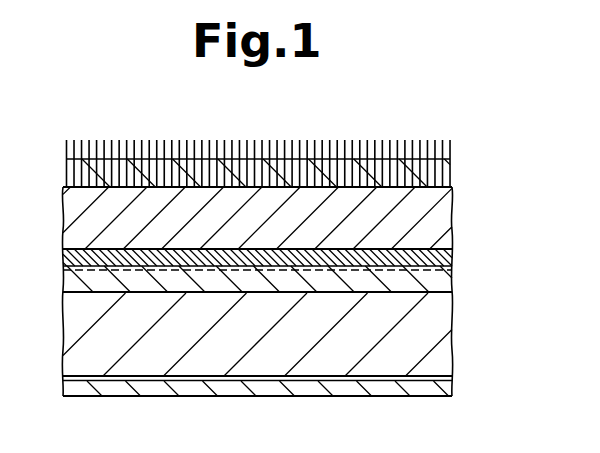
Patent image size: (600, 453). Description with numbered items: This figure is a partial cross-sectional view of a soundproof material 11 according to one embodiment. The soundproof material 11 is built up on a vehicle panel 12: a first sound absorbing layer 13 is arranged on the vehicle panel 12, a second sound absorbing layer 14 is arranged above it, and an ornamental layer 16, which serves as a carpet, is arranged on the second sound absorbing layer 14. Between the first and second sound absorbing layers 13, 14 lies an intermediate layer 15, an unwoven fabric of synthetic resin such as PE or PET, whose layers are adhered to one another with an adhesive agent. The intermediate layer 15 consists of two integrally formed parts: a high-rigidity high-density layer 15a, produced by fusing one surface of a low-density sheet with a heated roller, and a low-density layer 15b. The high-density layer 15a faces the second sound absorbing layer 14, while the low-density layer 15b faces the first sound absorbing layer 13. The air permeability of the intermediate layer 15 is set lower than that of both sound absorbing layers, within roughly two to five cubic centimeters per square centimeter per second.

The soundproof material 11 is at (215, 138).
The vehicle panel 12 is at (63, 385).
The first sound absorbing layer 13 is at (63, 325).
The second sound absorbing layer 14 is at (63, 205).
The intermediate layer 15 is at (527, 243).
The high-density layer 15a is at (452, 259).
The low-density layer 15b is at (452, 285).
The ornamental layer 16 is at (452, 171).